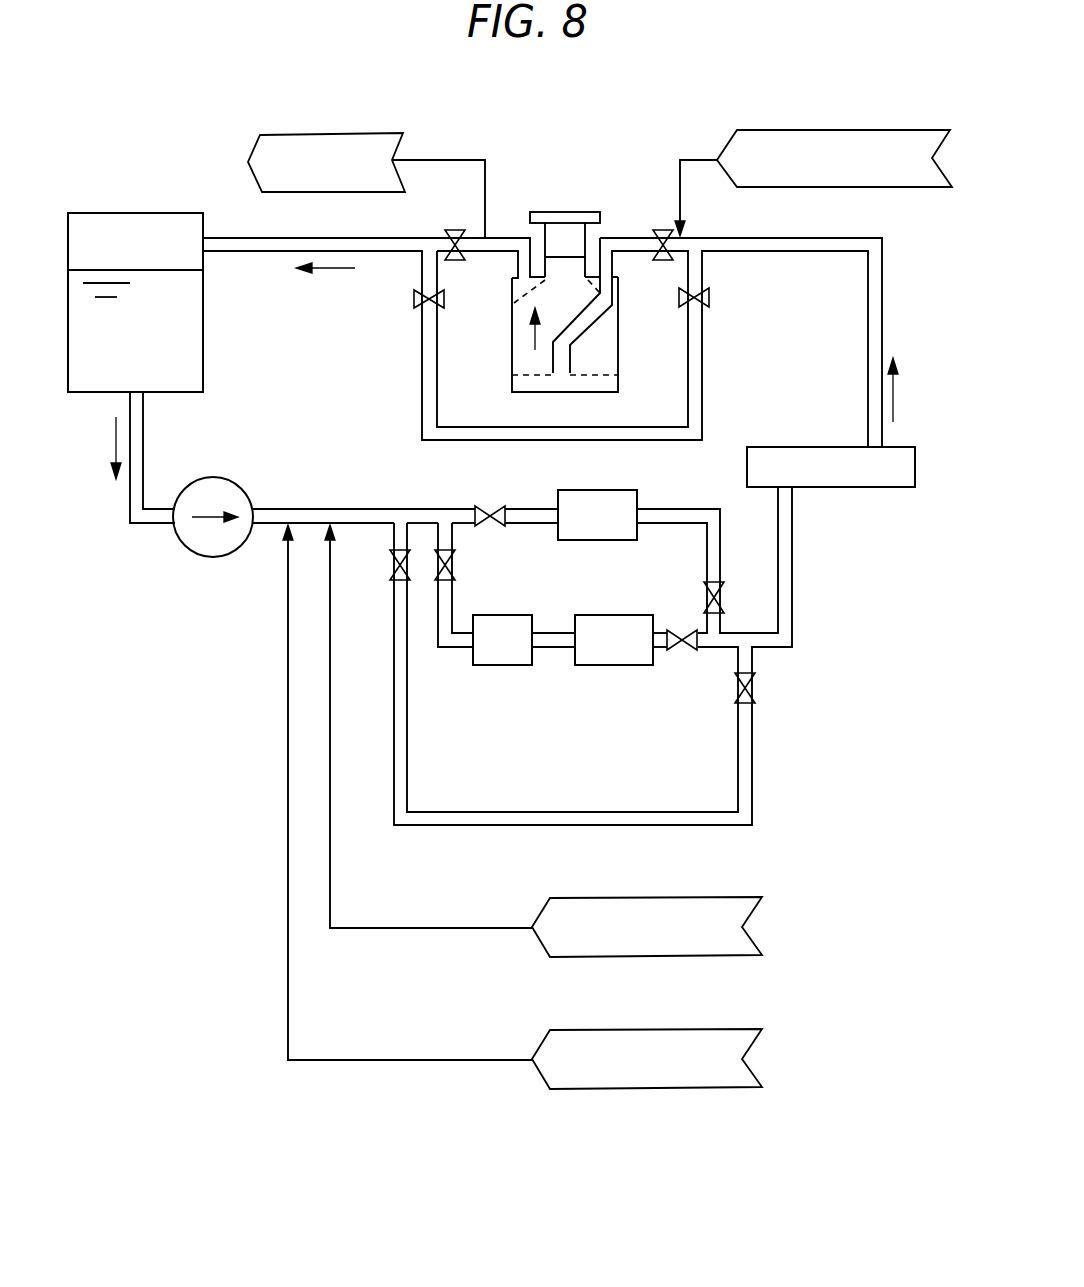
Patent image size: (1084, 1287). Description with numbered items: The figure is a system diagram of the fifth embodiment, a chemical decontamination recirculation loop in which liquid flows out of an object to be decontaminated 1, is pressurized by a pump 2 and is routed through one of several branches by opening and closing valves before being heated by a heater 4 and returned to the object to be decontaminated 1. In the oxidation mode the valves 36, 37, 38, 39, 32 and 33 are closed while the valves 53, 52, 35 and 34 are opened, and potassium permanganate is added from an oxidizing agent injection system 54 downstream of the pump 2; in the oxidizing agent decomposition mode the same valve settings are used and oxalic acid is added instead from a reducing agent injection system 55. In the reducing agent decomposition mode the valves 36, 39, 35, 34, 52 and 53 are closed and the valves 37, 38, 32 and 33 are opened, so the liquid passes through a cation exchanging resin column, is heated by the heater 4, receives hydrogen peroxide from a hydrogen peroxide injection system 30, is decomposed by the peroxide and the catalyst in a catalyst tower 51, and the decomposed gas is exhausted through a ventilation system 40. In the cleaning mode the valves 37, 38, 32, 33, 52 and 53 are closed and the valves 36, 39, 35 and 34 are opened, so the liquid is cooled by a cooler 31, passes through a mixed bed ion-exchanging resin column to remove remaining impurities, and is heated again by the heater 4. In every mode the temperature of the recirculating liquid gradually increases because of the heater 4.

The object to be decontaminated 1 is at (203, 330).
The pump 2 is at (188, 550).
The heater 4 is at (790, 447).
The hydrogen peroxide injection system 30 is at (833, 130).
The cooler 31 is at (502, 667).
The valve 32 is at (661, 230).
The valve 33 is at (457, 230).
The valve 34 is at (413, 303).
The valve 35 is at (710, 300).
The valve 36 is at (457, 573).
The valve 37 is at (505, 507).
The valve 38 is at (725, 603).
The valve 39 is at (607, 490).
The ventilation system 40 is at (303, 133).
The catalyst tower 51 is at (510, 330).
The valve 52 is at (755, 692).
The valve 53 is at (391, 578).
The oxidizing agent injection system 54 is at (653, 957).
The reducing agent injection system 55 is at (653, 1089).